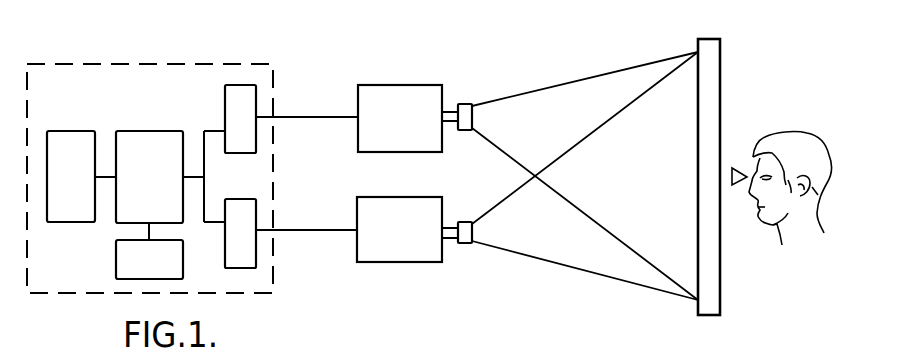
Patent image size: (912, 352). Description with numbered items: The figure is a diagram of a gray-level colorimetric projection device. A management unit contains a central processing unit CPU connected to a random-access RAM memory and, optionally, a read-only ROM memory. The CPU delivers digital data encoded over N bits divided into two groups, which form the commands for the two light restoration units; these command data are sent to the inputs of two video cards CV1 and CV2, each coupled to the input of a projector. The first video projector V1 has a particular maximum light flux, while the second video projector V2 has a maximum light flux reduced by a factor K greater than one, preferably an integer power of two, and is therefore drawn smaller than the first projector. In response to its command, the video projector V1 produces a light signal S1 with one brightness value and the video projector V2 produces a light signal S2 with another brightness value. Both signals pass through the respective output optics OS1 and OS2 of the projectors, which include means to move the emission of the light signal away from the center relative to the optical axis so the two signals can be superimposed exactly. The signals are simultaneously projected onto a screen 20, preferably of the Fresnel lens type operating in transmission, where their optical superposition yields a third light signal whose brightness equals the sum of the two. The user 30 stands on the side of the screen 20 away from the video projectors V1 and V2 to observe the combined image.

The RAM memory RAM is at (91, 188).
The central processing unit CPU is at (170, 188).
The ROM memory ROM is at (149, 259).
The video card CV1 is at (240, 119).
The video card CV2 is at (240, 233).
The first video projector V1 is at (372, 95).
The second video projector V2 is at (376, 243).
The output optics OS1 is at (467, 110).
The output optics OS2 is at (467, 243).
The light signal S1 is at (552, 87).
The light signal S2 is at (550, 263).
The screen 20 is at (713, 300).
The user 30 is at (791, 122).